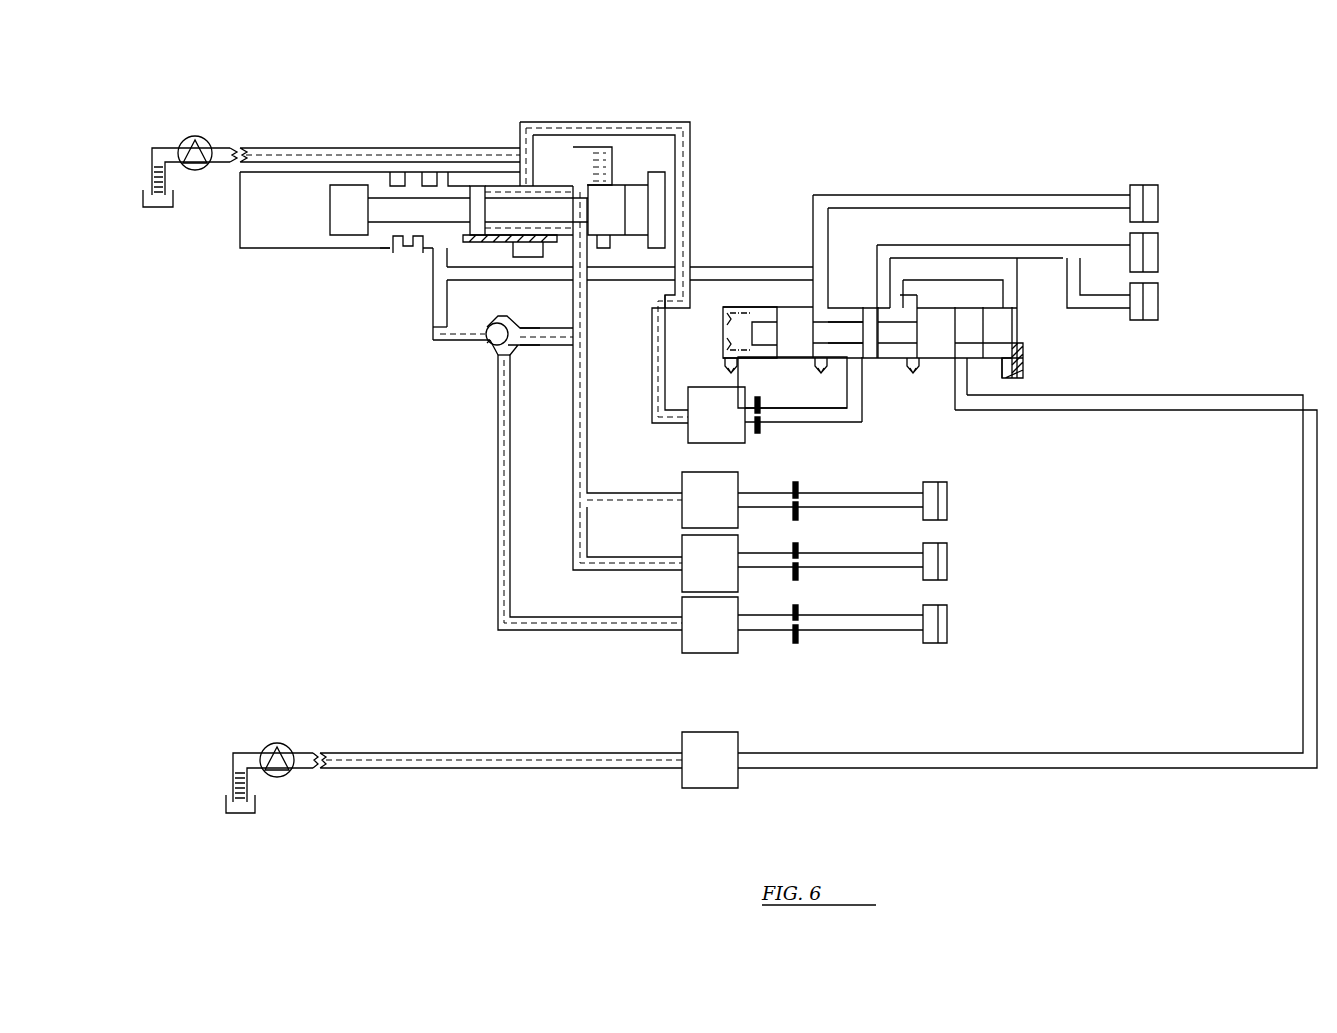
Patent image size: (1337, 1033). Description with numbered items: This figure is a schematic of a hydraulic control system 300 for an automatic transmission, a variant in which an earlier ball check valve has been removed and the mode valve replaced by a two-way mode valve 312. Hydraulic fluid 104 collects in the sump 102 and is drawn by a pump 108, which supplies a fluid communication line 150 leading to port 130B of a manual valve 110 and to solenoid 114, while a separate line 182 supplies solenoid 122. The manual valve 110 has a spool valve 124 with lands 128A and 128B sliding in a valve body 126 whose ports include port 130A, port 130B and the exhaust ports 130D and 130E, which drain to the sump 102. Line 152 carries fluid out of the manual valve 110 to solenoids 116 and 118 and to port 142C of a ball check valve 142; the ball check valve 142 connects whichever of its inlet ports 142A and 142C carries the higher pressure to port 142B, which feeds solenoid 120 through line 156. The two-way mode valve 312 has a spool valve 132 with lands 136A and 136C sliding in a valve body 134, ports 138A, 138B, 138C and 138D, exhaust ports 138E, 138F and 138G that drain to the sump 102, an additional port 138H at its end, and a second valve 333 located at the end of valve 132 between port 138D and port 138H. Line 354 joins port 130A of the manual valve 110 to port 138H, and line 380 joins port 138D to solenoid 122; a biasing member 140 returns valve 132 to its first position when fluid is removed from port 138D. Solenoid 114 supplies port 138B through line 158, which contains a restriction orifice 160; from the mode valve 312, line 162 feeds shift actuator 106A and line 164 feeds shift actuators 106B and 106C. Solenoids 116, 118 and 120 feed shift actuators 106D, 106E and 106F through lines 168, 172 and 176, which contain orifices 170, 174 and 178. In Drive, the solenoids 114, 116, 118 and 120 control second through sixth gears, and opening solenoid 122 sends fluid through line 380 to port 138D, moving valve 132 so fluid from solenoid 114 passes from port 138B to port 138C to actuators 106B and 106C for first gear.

The sump 102 is at (161, 210).
The hydraulic fluid 104 is at (166, 180).
The shift actuator 106A is at (1152, 205).
The shift actuator 106B is at (1152, 252).
The shift actuator 106C is at (1152, 304).
The shift actuator 106D is at (944, 495).
The shift actuator 106E is at (946, 568).
The shift actuator 106F is at (946, 630).
The pump 108 is at (197, 136).
The manual valve 110 is at (665, 106).
The solenoid 114 is at (775, 415).
The solenoid 116 is at (710, 500).
The solenoid 118 is at (710, 563).
The solenoid 120 is at (710, 625).
The solenoid 122 is at (710, 760).
The valve 124 is at (397, 197).
The valve body 126 is at (480, 240).
The land 128A is at (478, 190).
The land 128B is at (598, 195).
The port 130A is at (428, 260).
The port 130B is at (526, 180).
The exhaust port 130D is at (657, 247).
The exhaust port 130E is at (400, 243).
The valve 132 is at (825, 333).
The valve body 134 is at (1027, 378).
The land 136A is at (787, 320).
The land 136C is at (935, 322).
The port 138A is at (820, 305).
The port 138B is at (858, 362).
The port 138C is at (884, 303).
The port 138D is at (968, 372).
The exhaust port 138E is at (724, 368).
The exhaust port 138F is at (822, 376).
The exhaust port 138G is at (918, 376).
The port 138H is at (1015, 303).
The biasing member 140 is at (722, 337).
The ball check valve 142 is at (408, 389).
The first port 142A is at (487, 343).
The second port 142B is at (503, 356).
The third port 142C is at (535, 338).
The fluid communication line 150 is at (289, 148).
The fluid communication line 152 is at (573, 448).
The fluid communication line 156 is at (496, 500).
The fluid communication line 158 is at (772, 420).
The fluid restriction orifice 160 is at (757, 395).
The fluid communication line 162 is at (1004, 196).
The fluid communication line 164 is at (946, 252).
The fluid communication line 168 is at (860, 494).
The fluid restriction orifice 170 is at (796, 511).
The fluid communication line 172 is at (860, 555).
The fluid restriction orifice 174 is at (800, 552).
The fluid communication line 176 is at (860, 617).
The fluid restriction orifice 178 is at (800, 614).
The fluid communication line 182 is at (434, 750).
The hydraulic control system 300 is at (1053, 123).
The two-way mode valve 312 is at (772, 196).
The second valve 333 is at (995, 345).
The fluid communication line 354 is at (437, 332).
The fluid communication line 380 is at (1277, 395).